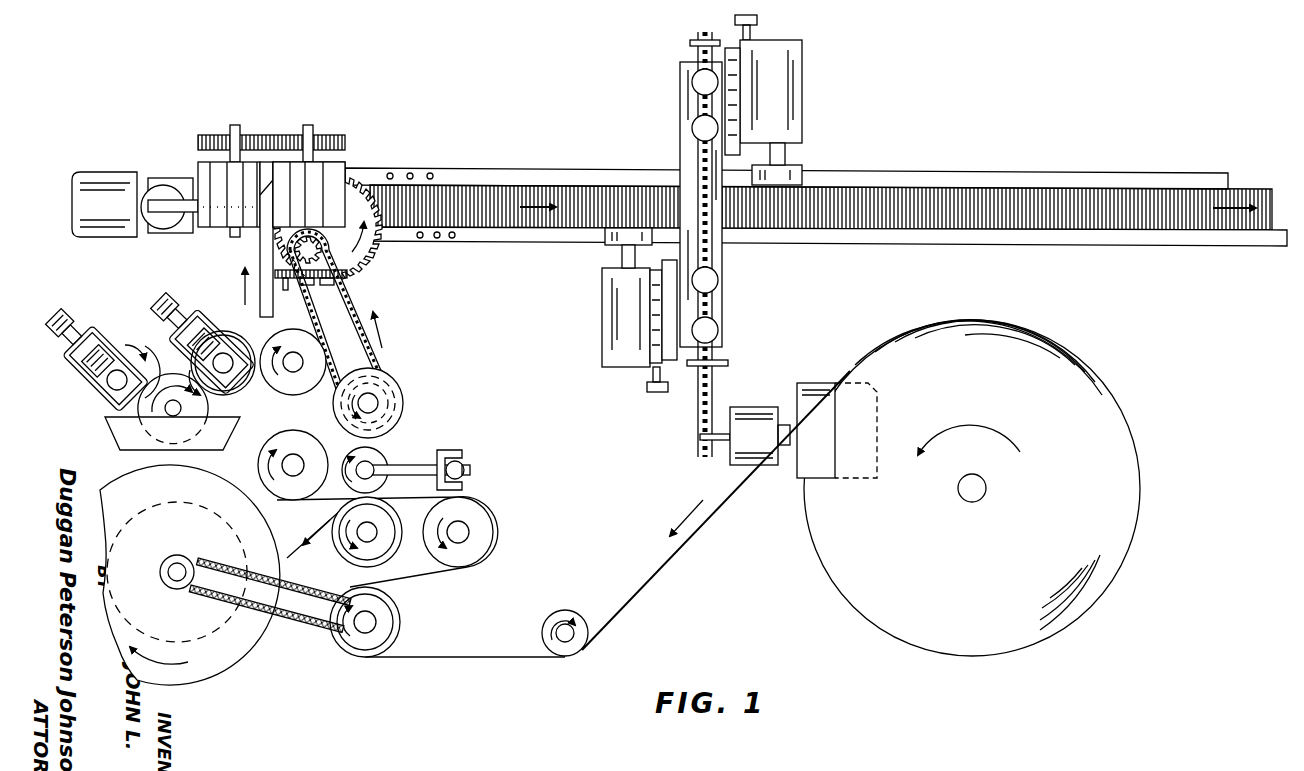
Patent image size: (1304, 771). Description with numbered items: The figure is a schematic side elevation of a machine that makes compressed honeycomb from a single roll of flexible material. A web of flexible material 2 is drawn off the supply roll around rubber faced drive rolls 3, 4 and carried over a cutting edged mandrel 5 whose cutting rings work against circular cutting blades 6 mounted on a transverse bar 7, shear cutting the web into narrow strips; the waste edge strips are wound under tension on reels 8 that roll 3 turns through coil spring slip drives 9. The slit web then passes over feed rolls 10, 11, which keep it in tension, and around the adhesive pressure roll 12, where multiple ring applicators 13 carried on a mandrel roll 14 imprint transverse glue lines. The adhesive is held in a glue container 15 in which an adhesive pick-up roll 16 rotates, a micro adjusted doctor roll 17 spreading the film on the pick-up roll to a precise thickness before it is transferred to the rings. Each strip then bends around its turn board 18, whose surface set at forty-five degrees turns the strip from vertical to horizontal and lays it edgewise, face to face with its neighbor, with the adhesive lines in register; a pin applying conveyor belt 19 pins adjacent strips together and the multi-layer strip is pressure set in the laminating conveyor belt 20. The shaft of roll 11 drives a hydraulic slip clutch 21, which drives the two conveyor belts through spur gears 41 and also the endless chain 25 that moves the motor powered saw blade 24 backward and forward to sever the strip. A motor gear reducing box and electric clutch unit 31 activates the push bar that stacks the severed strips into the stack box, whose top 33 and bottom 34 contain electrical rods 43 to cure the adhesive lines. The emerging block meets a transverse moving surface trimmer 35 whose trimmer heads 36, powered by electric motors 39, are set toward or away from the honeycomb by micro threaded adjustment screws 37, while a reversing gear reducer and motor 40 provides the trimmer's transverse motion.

The web of flexible material 2 is at (665, 565).
The rubber faced drive roll 3 is at (400, 616).
The rubber faced drive roll 4 is at (494, 530).
The cutting edged mandrel 5 is at (340, 550).
The circular cutting blade 6 is at (385, 458).
The transverse bar 7 is at (456, 462).
The reel 8 is at (245, 662).
The coil spring slip drive 9 is at (296, 633).
The feed roll 10 is at (258, 466).
The feed roll 11 is at (393, 389).
The adhesive pressure roll 12 is at (283, 386).
The multiple ring applicator 13 is at (228, 332).
The mandrel roll 14 is at (183, 362).
The glue container 15 is at (105, 415).
The adhesive pick-up roll 16 is at (140, 428).
The doctor roll 17 is at (85, 390).
The turn board 18 is at (265, 310).
The pin applying conveyor belt 19 is at (347, 166).
The laminating conveyor belt 20 is at (198, 172).
The hydraulic slip clutch 21 is at (362, 380).
The saw blade 24 is at (372, 258).
The endless chain 25 is at (320, 282).
The motor gear reducing box and electric clutch unit 31 is at (108, 232).
The top of stack box 33 is at (533, 172).
The bottom of stack box 34 is at (530, 243).
The transverse moving surface trimmer 35 is at (680, 76).
The trimmer head 36 is at (803, 168).
The micro threaded adjustment screw 37 is at (758, 20).
The electric motor 39 is at (803, 100).
The reversing gear reducer and motor 40 is at (808, 385).
The spur gear 41 is at (283, 133).
The electrical rod 43 is at (431, 174).